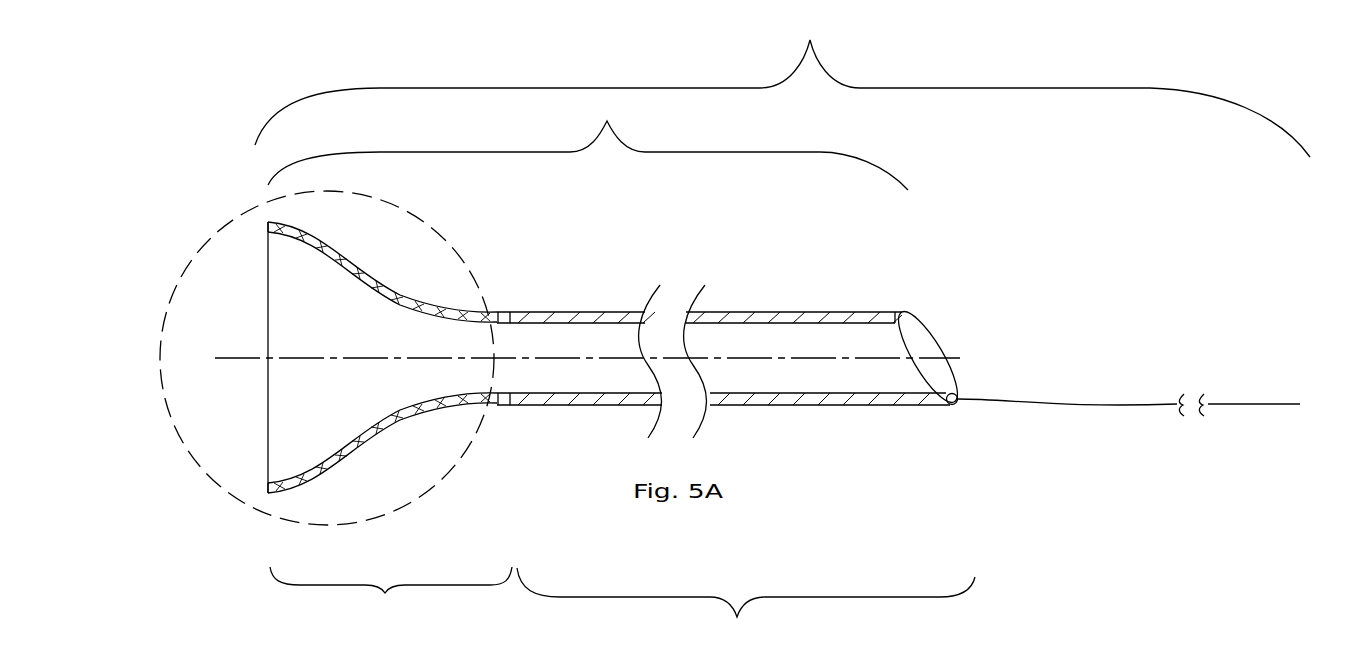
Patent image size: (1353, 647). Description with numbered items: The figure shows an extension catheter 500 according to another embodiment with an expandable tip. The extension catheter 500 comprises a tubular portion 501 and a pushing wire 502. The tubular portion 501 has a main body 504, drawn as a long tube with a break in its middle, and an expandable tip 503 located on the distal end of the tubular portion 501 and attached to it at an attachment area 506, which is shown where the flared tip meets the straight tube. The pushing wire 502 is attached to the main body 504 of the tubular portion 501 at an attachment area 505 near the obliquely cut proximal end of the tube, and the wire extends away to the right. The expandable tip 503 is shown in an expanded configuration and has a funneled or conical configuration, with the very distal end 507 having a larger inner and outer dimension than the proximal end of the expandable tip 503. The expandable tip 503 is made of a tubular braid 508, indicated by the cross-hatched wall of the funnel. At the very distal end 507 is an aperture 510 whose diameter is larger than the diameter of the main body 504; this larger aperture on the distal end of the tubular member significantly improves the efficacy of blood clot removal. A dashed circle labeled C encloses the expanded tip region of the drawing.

The extension catheter 500 is at (782, 85).
The tubular portion 501 is at (588, 143).
The pushing wire 502 is at (1235, 400).
The expandable tip 503 is at (391, 594).
The main body 504 is at (736, 463).
The attachment area 505 is at (957, 408).
The attachment area 506 is at (515, 308).
The very distal end 507 is at (268, 227).
The tubular braid 508 is at (430, 418).
The aperture 510 is at (302, 388).
The detail C is at (250, 212).